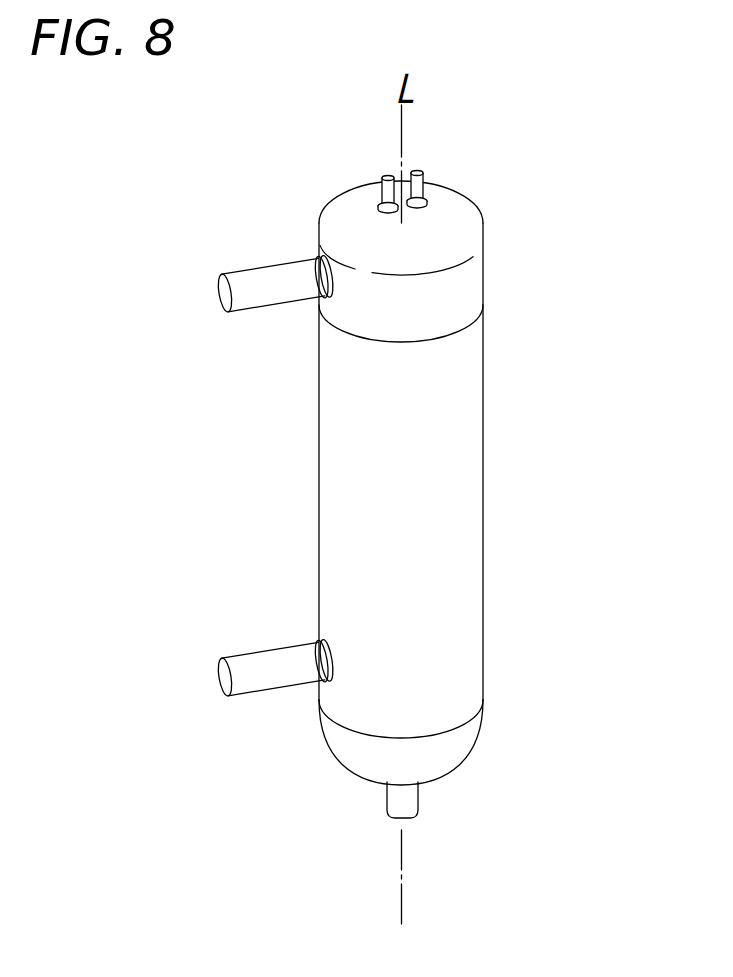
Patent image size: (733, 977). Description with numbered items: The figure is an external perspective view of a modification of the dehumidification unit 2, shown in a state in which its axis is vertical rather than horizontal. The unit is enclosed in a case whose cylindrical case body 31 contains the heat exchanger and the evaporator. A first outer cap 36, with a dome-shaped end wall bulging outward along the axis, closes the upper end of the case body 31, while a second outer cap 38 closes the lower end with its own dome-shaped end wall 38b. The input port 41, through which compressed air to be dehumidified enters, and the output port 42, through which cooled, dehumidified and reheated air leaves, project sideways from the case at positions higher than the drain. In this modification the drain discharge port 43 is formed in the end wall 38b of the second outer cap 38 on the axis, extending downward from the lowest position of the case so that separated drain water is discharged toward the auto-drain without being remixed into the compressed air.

The dehumidification unit 2 is at (540, 413).
The case body 31 is at (452, 582).
The first outer cap 36 is at (465, 272).
The second outer cap 38 is at (452, 745).
The end wall 38b is at (358, 780).
The input port 41 is at (260, 278).
The output port 42 is at (255, 660).
The drain discharge port 43 is at (410, 802).